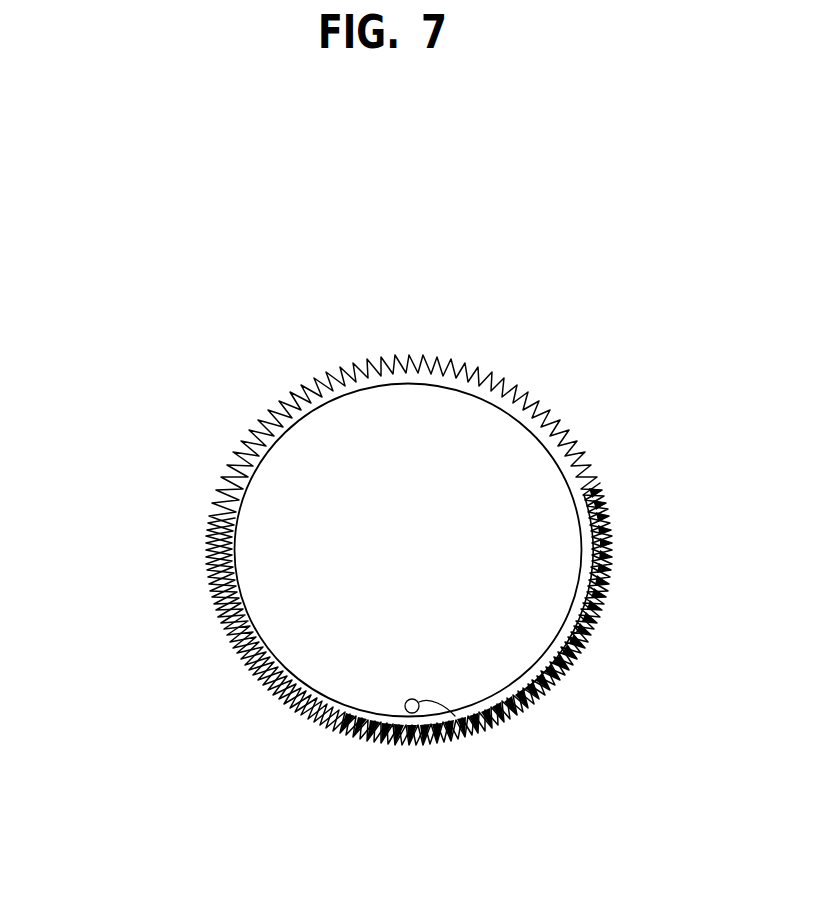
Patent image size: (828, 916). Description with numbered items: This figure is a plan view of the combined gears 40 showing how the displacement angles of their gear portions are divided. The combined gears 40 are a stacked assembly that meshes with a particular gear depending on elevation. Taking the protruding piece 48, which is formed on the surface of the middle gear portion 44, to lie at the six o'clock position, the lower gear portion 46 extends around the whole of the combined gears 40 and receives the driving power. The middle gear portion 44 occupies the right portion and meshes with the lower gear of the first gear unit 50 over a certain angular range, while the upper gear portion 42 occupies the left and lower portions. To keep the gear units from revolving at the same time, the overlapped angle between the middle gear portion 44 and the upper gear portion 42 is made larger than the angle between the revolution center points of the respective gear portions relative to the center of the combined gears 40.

The combined gears 40 is at (204, 568).
The upper gear portion 42 is at (292, 705).
The middle gear portion 44 is at (605, 592).
The lower gear portion 46 is at (553, 415).
The protruding piece 48 is at (463, 728).
The first gear unit 50 is at (591, 724).